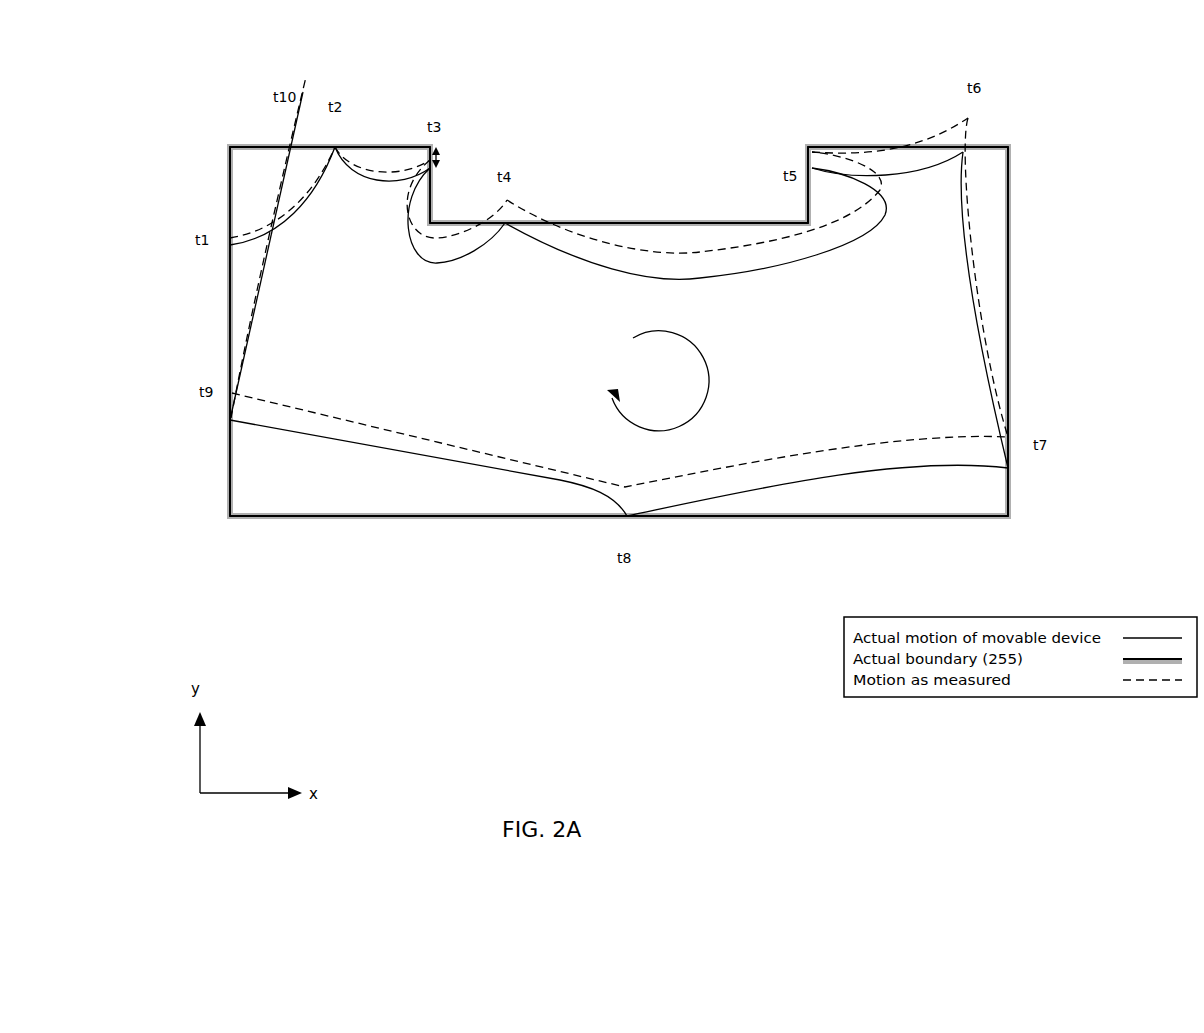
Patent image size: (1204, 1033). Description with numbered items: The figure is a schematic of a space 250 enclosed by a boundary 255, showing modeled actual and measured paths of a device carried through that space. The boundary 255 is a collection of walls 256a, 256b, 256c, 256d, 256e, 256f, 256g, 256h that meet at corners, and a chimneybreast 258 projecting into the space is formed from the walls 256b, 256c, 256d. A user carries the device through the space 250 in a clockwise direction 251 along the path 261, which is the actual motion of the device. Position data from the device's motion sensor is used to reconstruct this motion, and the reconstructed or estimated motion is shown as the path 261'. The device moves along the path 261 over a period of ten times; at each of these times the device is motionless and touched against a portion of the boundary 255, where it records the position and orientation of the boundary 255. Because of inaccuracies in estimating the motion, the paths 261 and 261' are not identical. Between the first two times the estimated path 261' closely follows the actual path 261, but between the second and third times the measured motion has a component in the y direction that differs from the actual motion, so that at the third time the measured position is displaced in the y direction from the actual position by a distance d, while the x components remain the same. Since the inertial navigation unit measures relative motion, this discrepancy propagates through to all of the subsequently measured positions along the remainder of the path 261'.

The space 250 is at (838, 359).
The clockwise direction 251 is at (658, 381).
The boundary 255 is at (1062, 212).
The wall 256a is at (245, 147).
The wall 256b is at (430, 203).
The wall 256c is at (638, 222).
The wall 256d is at (808, 198).
The wall 256e is at (993, 148).
The wall 256f is at (1010, 343).
The wall 256g is at (475, 517).
The wall 256h is at (226, 459).
The chimneybreast 258 is at (603, 142).
The path 261 is at (619, 468).
The path 261' is at (620, 418).
The distance d is at (450, 146).